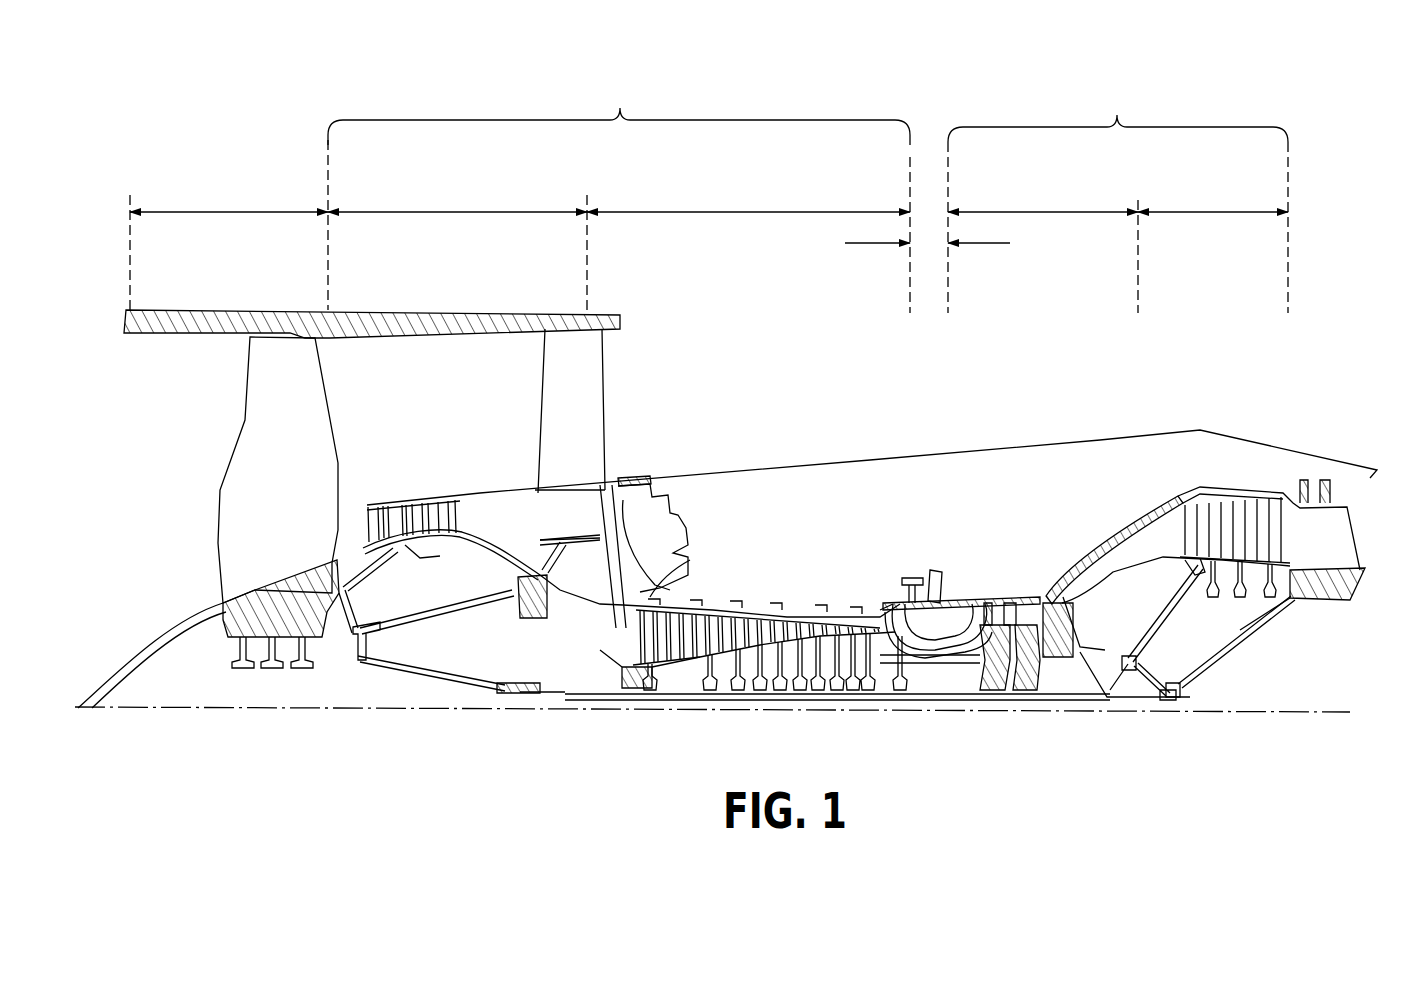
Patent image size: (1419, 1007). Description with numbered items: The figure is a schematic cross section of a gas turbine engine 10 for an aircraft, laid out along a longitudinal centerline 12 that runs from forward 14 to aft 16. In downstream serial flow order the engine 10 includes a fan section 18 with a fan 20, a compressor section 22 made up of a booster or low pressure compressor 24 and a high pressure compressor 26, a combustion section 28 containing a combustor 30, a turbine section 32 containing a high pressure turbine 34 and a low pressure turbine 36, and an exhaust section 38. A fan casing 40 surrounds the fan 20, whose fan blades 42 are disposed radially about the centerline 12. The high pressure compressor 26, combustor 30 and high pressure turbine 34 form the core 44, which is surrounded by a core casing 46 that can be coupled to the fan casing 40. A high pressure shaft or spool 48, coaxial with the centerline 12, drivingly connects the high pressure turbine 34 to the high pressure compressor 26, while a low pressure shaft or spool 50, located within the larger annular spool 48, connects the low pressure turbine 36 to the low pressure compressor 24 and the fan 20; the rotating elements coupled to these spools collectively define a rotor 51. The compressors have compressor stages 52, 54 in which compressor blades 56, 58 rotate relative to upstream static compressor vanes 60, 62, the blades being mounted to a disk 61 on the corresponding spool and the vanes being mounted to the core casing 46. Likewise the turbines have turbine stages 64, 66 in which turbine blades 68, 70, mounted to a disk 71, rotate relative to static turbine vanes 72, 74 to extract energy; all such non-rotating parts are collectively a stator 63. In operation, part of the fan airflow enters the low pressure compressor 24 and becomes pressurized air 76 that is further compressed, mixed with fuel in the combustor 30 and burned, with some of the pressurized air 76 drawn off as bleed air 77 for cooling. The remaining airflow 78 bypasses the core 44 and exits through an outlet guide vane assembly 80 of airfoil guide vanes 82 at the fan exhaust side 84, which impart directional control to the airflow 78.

The gas turbine engine 10 is at (1305, 245).
The centerline 12 is at (205, 710).
The forward 14 is at (162, 447).
The aft 16 is at (1390, 548).
The fan section 18 is at (228, 212).
The fan 20 is at (195, 558).
The compressor section 22 is at (620, 112).
The low pressure compressor 24 is at (470, 212).
The high pressure compressor 26 is at (760, 212).
The combustion section 28 is at (858, 243).
The combustor 30 is at (950, 605).
The turbine section 32 is at (1117, 118).
The high pressure turbine 34 is at (1045, 212).
The low pressure turbine 36 is at (1210, 212).
The exhaust section 38 is at (1375, 478).
The fan casing 40 is at (357, 313).
The fan blades 42 is at (297, 376).
The core 44 is at (872, 490).
The core casing 46 is at (1120, 532).
The HP shaft or spool 48 is at (918, 658).
The LP shaft or spool 50 is at (522, 705).
The rotor 51 is at (773, 700).
The compressor stages 52 is at (443, 452).
The compressor stages 54 is at (750, 600).
The compressor blades 56 is at (399, 518).
The compressor blades 58 is at (655, 592).
The static compressor vanes 60 is at (376, 514).
The disk 61 is at (415, 548).
The static compressor vanes 62 is at (663, 553).
The stator 63 is at (655, 665).
The turbine stages 64 is at (950, 552).
The turbine stages 66 is at (1217, 425).
The turbine blades 68 is at (1003, 600).
The turbine blades 70 is at (1275, 500).
The disk 71 is at (1013, 657).
The static turbine vanes 72 is at (988, 600).
The static turbine vanes 74 is at (1255, 500).
The pressurized air 76 is at (555, 618).
The bleed air 77 is at (775, 585).
The airflow 78 is at (643, 388).
The outlet guide vane assembly 80 is at (615, 446).
The airfoil guide vanes 82 is at (550, 420).
The fan exhaust side 84 is at (622, 358).